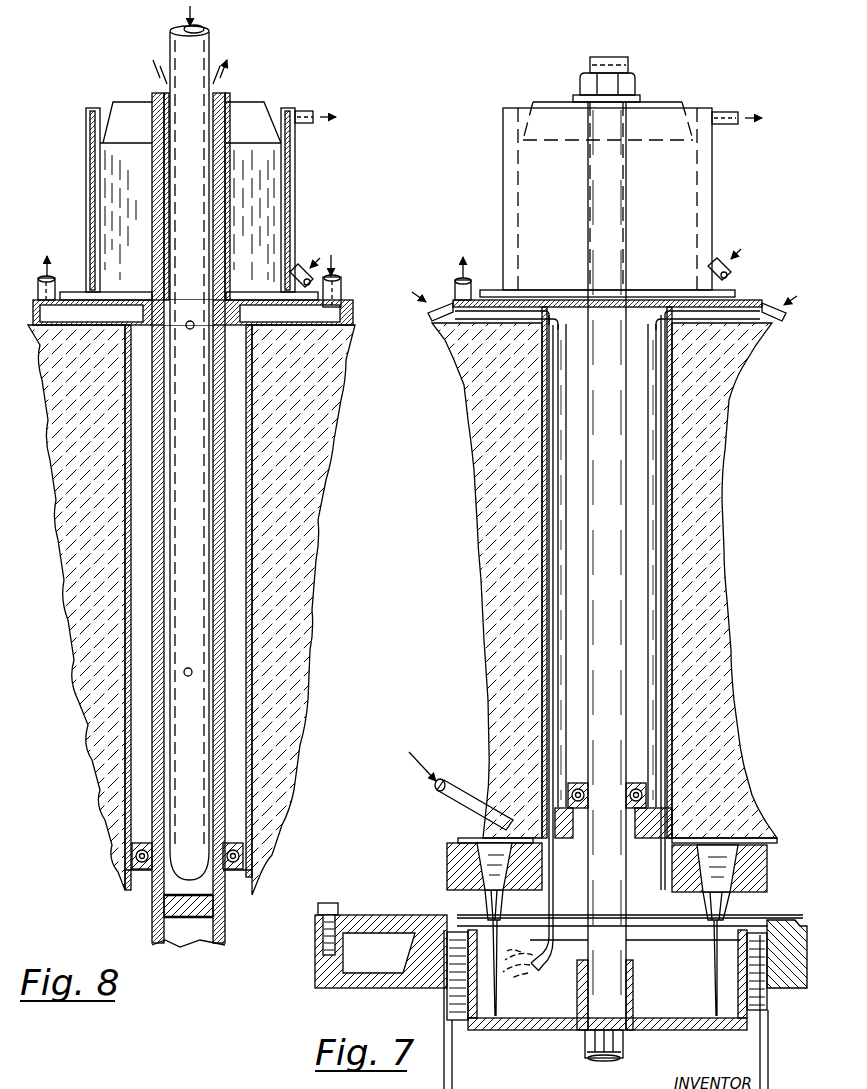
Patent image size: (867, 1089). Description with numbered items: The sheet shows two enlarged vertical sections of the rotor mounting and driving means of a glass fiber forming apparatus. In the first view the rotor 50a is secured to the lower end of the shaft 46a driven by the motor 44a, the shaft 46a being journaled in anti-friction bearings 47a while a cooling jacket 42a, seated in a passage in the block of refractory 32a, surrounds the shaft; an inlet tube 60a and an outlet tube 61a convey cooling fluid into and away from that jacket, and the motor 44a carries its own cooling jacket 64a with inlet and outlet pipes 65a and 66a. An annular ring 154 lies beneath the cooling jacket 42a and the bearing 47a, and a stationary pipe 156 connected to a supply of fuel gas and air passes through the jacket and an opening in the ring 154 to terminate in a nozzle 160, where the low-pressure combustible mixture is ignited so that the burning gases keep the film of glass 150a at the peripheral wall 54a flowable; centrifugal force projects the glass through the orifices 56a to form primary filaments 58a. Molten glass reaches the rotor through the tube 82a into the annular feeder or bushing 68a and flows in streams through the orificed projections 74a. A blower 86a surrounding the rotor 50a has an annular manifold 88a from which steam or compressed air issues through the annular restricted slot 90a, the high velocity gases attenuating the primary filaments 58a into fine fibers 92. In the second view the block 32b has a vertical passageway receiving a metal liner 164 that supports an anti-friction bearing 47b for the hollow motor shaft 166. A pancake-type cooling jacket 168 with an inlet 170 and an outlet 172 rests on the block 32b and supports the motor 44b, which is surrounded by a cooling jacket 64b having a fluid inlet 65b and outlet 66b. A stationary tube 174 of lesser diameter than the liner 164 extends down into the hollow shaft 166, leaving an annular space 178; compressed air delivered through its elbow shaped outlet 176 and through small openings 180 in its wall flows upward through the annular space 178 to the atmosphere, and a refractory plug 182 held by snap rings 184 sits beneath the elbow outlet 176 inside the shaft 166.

In FIG. 8, the stationary tube 174 is at (172, 50).
In FIG. 8, the motor 44b is at (252, 98).
In FIG. 8, the outlet 66b is at (313, 112).
In FIG. 8, the cooling jacket 64b is at (290, 158).
In FIG. 8, the fluid inlet 65b is at (299, 264).
In FIG. 8, the inlet 170 is at (380, 266).
In FIG. 8, the pancake-type cooling jacket 168 is at (80, 313).
In FIG. 8, the outlet 172 is at (38, 282).
In FIG. 8, the small openings 180 is at (188, 330).
In FIG. 8, the metal liner 164 is at (253, 421).
In FIG. 8, the block 32b is at (336, 460).
In FIG. 8, the annular space 178 is at (168, 496).
In FIG. 8, the motor shaft 166 is at (225, 540).
In FIG. 8, the elbow shaped outlet 176 is at (172, 855).
In FIG. 8, the anti-friction bearing 47b is at (236, 845).
In FIG. 8, the snap rings 184 is at (166, 918).
In FIG. 8, the plug 182 is at (182, 908).
In FIG. 7, the motor 44a is at (568, 97).
In FIG. 7, the outlet pipe 66a is at (723, 119).
In FIG. 7, the cooling jacket 64a is at (712, 168).
In FIG. 7, the inlet pipe 65a is at (725, 262).
In FIG. 7, the outlet tube 61a is at (489, 237).
In FIG. 7, the inlet tube 60a is at (789, 270).
In FIG. 7, the block of refractory 32a is at (736, 365).
In FIG. 7, the cooling jacket 42a is at (655, 461).
In FIG. 7, the shaft 46a is at (627, 548).
In FIG. 7, the pipe 156 is at (551, 551).
In FIG. 7, the anti-friction bearings 47a is at (640, 786).
In FIG. 7, the ring 154 is at (668, 822).
In FIG. 7, the tube 82a is at (481, 775).
In FIG. 7, the feeder 68a is at (476, 856).
In FIG. 7, the orificed projections 74a is at (487, 900).
In FIG. 7, the annular restricted slot 90a is at (449, 920).
In FIG. 7, the annular manifold 88a is at (381, 945).
In FIG. 7, the blower 86a is at (342, 990).
In FIG. 7, the primary filaments 58a is at (458, 985).
In FIG. 7, the orifices 56a is at (470, 1005).
In FIG. 7, the film of glass 150a is at (479, 1021).
In FIG. 7, the rotor 50a is at (563, 1033).
In FIG. 7, the nozzle 160 is at (526, 958).
In FIG. 7, the peripheral wall 54a is at (746, 977).
In FIG. 7, the fine fibers 92 is at (763, 1046).